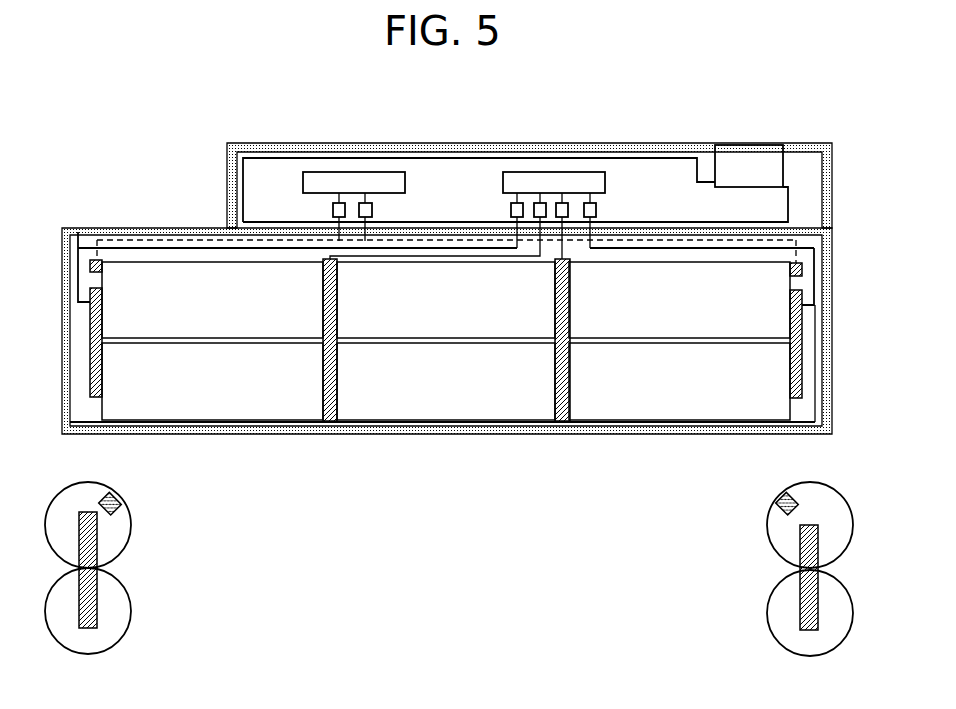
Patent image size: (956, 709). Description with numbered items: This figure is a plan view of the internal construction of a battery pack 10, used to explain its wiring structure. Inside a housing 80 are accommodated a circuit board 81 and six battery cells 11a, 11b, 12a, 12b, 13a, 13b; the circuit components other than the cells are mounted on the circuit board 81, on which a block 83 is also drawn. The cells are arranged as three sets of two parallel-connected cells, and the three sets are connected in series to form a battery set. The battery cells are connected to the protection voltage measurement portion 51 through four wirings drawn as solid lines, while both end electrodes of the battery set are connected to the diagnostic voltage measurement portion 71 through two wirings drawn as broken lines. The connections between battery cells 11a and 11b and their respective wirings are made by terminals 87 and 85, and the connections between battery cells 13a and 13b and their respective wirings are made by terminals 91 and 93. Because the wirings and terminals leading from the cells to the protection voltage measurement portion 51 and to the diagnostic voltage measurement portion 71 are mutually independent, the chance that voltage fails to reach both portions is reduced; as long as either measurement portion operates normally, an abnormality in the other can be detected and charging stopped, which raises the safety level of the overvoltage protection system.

The battery pack 10 is at (160, 121).
The housing 80 is at (385, 150).
The circuit board 81 is at (641, 160).
The connector block 83 is at (750, 165).
The diagnostic voltage measurement portion 71 is at (326, 173).
The protection voltage measurement portion 51 is at (560, 173).
The terminal 87 is at (418, 200).
The terminal 93 is at (803, 262).
The terminal 85 is at (88, 332).
The terminal 91 is at (795, 400).
The battery cell 11a is at (205, 300).
The battery cell 11b is at (243, 388).
The battery cell 12a is at (462, 300).
The battery cell 12b is at (439, 388).
The battery cell 13a is at (661, 300).
The battery cell 13b is at (643, 388).